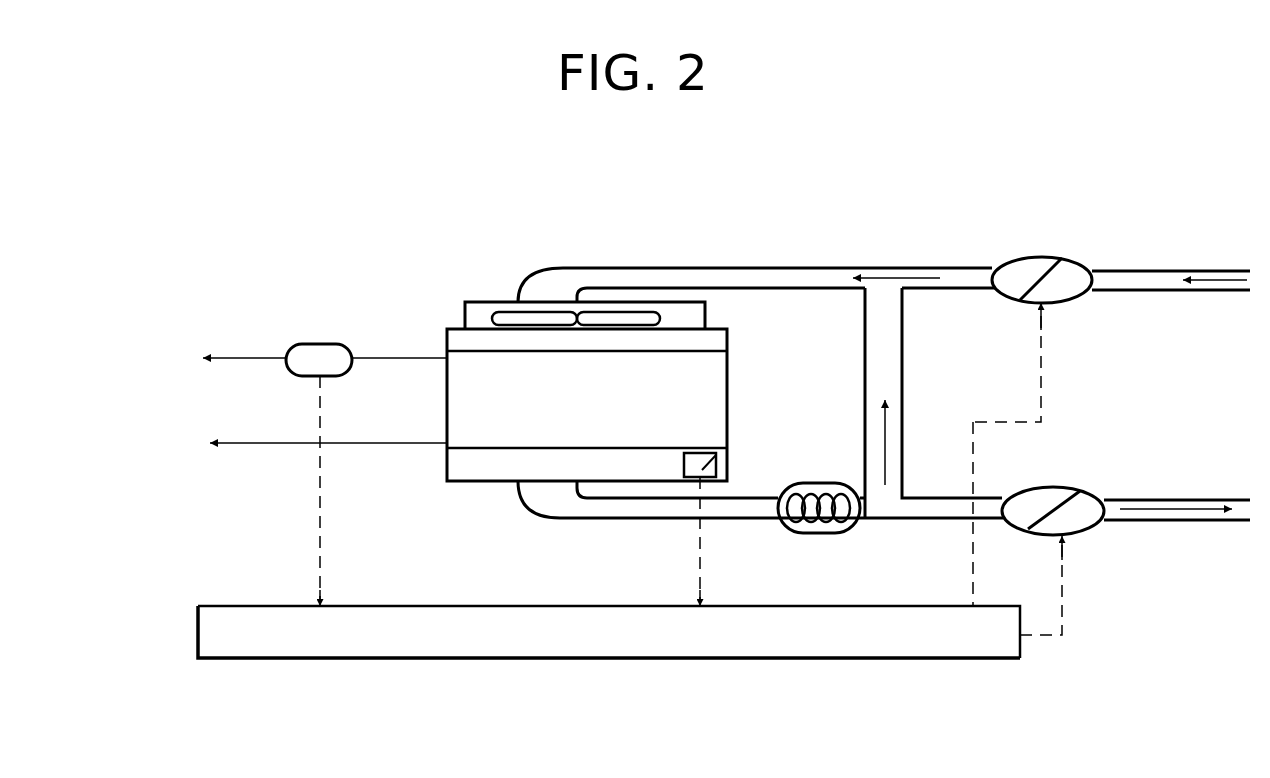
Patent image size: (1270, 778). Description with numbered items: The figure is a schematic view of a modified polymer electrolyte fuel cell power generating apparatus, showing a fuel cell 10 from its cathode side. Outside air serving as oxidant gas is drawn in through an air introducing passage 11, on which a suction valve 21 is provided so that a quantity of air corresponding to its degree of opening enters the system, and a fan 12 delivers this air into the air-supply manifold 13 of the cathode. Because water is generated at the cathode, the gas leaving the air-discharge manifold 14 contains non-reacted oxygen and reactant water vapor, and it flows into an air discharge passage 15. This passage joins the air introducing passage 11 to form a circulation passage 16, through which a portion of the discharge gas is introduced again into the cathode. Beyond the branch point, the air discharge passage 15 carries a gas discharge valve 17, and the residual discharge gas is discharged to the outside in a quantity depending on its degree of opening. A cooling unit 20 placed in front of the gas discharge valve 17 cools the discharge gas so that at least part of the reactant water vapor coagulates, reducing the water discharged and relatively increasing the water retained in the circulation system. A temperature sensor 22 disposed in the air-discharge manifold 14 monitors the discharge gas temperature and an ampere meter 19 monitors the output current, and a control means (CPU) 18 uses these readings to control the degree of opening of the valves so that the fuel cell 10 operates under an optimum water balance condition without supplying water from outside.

The fuel cell 10 is at (436, 334).
The air introducing passage 11 is at (745, 278).
The fan 12 is at (507, 317).
The air-supply manifold 13 is at (713, 343).
The air-discharge manifold 14 is at (473, 467).
The air discharge passage 15 is at (599, 514).
The circulation passage 16 is at (880, 345).
The gas discharge valve 17 is at (1050, 496).
The control means (CPU) 18 is at (410, 613).
The ampere meter 19 is at (300, 376).
The cooling unit 20 is at (820, 533).
The suction valve 21 is at (1078, 296).
The temperature sensor 22 is at (717, 457).